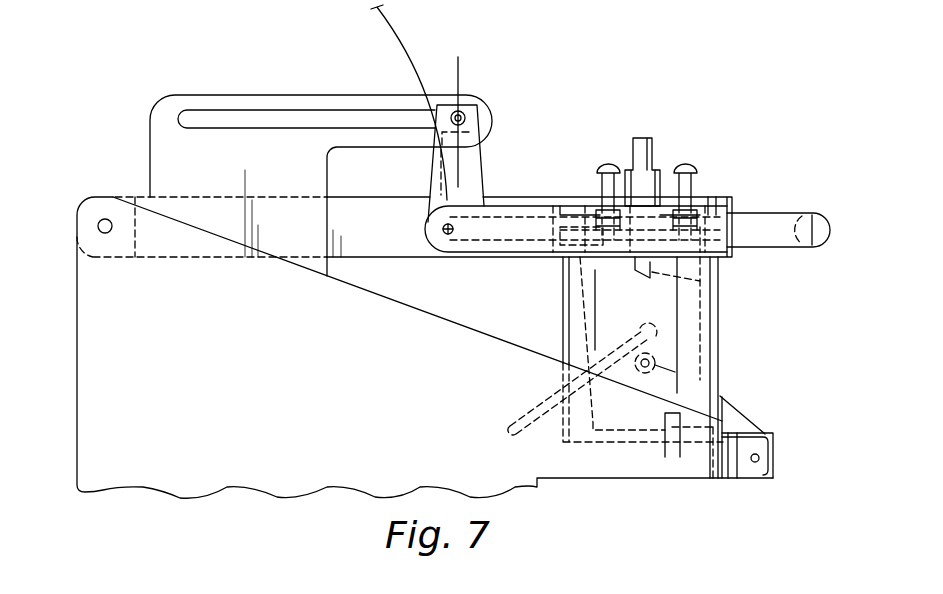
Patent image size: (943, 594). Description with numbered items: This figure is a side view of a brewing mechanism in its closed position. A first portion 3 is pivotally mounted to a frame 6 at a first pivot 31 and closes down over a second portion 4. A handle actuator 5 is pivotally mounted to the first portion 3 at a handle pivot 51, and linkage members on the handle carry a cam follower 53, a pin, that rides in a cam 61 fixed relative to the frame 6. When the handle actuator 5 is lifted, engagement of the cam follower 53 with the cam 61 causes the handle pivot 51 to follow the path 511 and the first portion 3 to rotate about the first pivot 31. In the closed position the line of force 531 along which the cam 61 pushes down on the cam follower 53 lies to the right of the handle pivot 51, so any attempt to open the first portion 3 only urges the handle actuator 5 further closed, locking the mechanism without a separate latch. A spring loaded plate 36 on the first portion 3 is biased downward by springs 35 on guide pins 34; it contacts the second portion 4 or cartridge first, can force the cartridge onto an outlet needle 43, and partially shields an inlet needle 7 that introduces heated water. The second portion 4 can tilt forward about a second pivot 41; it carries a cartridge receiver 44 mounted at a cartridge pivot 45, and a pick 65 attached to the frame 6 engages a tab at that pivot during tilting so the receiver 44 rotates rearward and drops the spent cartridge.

The first portion 3 is at (510, 205).
The second portion 4 is at (724, 331).
The handle actuator 5 is at (813, 213).
The frame 6 is at (82, 312).
The inlet needle 7 is at (705, 285).
The first pivot 31 is at (105, 218).
The guide pins 34 is at (607, 165).
The springs 35 is at (590, 204).
The spring loaded plate 36 is at (713, 227).
The second pivot 41 is at (760, 458).
The outlet needle 43 is at (681, 444).
The cartridge receiver 44 is at (700, 356).
The cartridge pivot 45 is at (677, 374).
The handle pivot 51 is at (449, 236).
The cam follower 53 is at (472, 122).
The cam 61 is at (300, 118).
The pick 65 is at (558, 333).
The path 511 is at (411, 59).
The line of force 531 is at (462, 68).